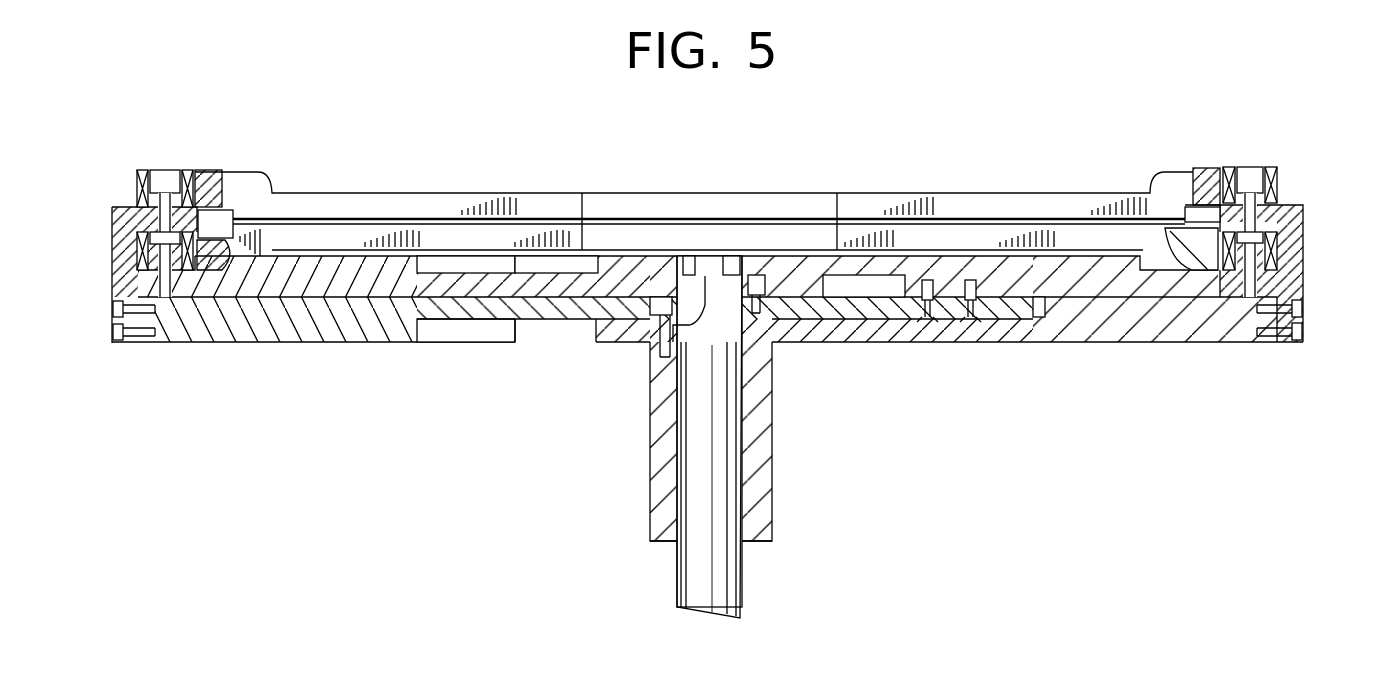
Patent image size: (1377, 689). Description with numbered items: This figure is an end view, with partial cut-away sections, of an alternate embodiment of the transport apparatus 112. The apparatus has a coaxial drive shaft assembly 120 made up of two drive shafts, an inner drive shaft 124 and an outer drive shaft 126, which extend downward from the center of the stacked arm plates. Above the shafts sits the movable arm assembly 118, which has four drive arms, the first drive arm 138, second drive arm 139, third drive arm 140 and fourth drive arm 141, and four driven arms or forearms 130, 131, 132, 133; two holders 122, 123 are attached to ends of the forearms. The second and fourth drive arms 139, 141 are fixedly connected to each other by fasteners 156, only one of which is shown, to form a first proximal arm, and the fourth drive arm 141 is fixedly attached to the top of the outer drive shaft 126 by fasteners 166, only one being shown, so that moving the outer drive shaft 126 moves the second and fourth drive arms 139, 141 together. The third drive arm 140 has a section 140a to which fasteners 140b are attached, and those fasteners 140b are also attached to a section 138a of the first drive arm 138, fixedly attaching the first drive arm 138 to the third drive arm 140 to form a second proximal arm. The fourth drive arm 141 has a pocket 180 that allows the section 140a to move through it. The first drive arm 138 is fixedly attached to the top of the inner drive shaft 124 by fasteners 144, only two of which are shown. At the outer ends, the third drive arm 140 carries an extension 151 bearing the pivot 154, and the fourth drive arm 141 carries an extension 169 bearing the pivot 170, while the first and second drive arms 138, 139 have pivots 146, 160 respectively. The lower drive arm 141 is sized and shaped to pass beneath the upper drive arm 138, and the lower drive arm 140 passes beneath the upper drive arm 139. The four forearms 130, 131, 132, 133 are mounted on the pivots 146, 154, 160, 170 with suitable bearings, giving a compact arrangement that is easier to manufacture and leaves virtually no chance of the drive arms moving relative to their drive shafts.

The transport apparatus 112 is at (963, 105).
The movable arm assembly 118 is at (508, 193).
The coaxial drive shaft assembly 120 is at (648, 504).
The holder 122 is at (775, 228).
The holder 123 is at (740, 193).
The inner drive shaft 124 is at (742, 593).
The outer drive shaft 126 is at (772, 507).
The forearm 130 is at (940, 230).
The forearm 131 is at (333, 230).
The forearm 132 is at (423, 200).
The forearm 133 is at (1035, 200).
The first drive arm 138 is at (1200, 280).
The section of first drive arm 138a is at (975, 300).
The second drive arm 139 is at (340, 290).
The third drive arm 140 is at (240, 343).
The section of third drive arm 140a is at (860, 318).
The fasteners 140b is at (930, 305).
The fourth drive arm 141 is at (1130, 343).
The fasteners 144 is at (732, 256).
The pivot 146 is at (1290, 266).
The extension 151 is at (112, 240).
The pivot 154 is at (135, 188).
The fasteners 156 is at (765, 305).
The pivot 160 is at (137, 288).
The fasteners 166 is at (655, 325).
The extension 169 is at (1303, 216).
The pivot 170 is at (1205, 190).
The pocket 180 is at (1045, 315).